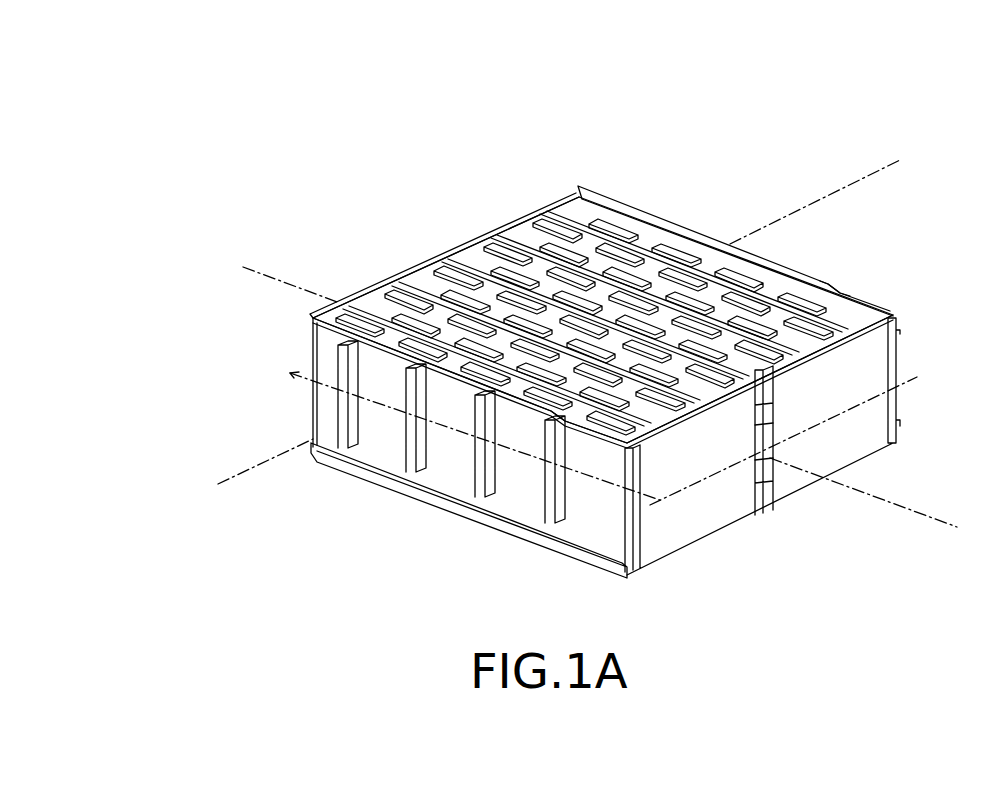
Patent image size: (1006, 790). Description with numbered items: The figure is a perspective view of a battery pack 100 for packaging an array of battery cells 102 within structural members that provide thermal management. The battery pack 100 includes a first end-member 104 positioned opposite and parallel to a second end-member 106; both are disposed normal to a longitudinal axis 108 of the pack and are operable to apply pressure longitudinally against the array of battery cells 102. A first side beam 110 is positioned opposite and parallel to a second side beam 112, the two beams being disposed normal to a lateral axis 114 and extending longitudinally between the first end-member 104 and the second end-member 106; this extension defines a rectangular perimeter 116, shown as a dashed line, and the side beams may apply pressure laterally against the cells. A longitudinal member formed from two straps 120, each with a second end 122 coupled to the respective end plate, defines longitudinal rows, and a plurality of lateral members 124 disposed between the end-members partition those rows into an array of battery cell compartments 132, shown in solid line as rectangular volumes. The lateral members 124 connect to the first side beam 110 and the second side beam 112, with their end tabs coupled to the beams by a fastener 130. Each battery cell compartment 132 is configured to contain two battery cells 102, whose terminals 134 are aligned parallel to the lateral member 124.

The battery pack 100 is at (914, 107).
The battery cells 102 is at (772, 186).
The first end-member 104 is at (521, 222).
The second end-member 106 is at (668, 523).
The longitudinal axis 108 is at (241, 267).
The first side beam 110 is at (450, 503).
The second side beam 112 is at (612, 196).
The lateral axis 114 is at (217, 483).
The perimeter 116 is at (923, 384).
The straps 120 is at (768, 425).
The second end 122 is at (763, 407).
The lateral member 124 is at (747, 263).
The fastener 130 is at (403, 477).
The battery cell compartments 132 is at (683, 243).
The terminals 134 is at (860, 305).